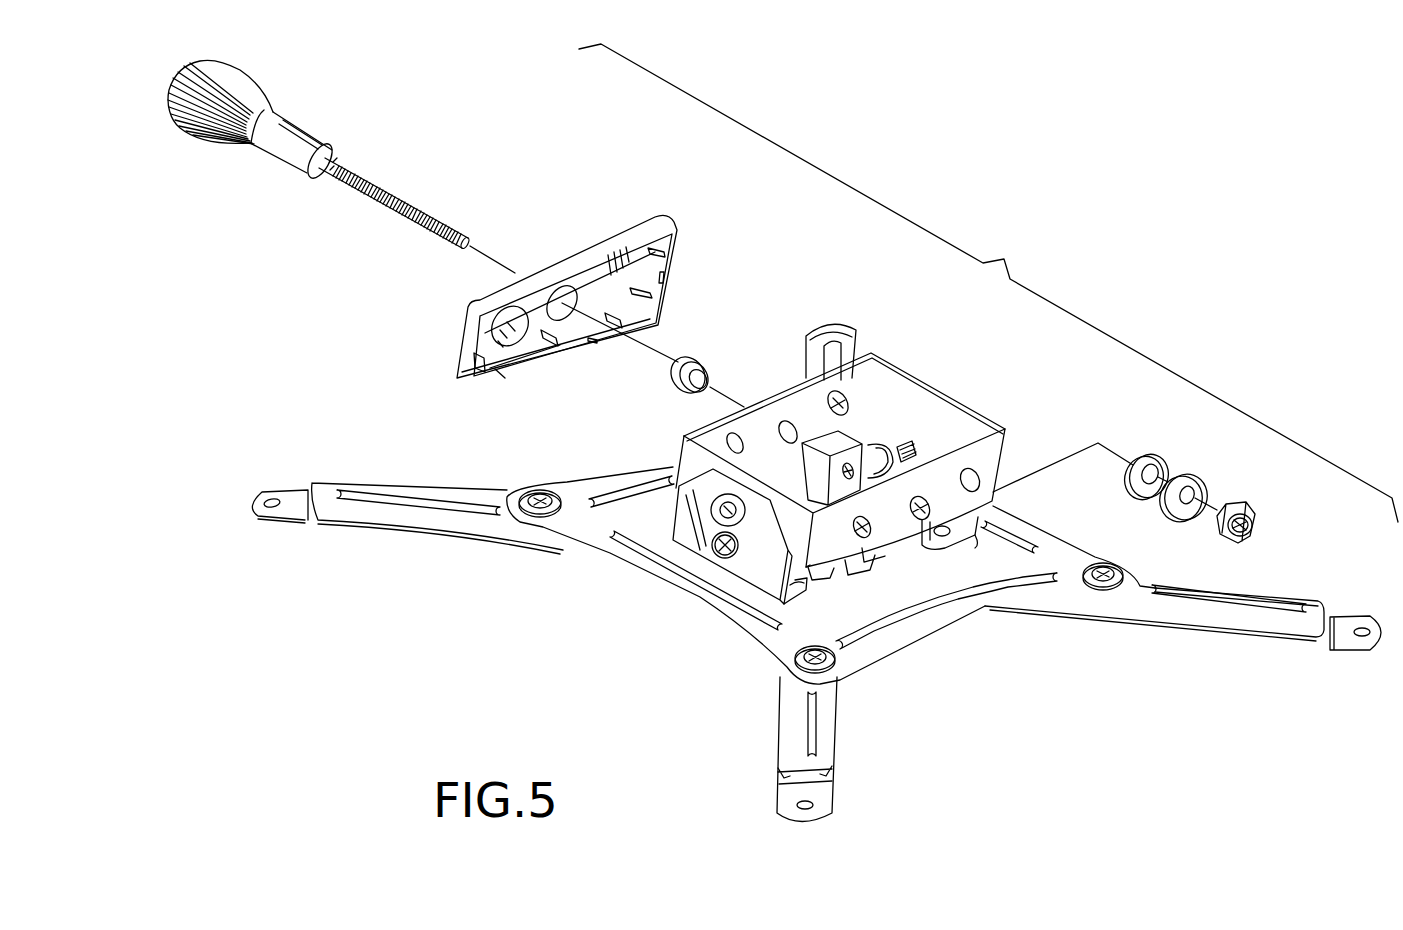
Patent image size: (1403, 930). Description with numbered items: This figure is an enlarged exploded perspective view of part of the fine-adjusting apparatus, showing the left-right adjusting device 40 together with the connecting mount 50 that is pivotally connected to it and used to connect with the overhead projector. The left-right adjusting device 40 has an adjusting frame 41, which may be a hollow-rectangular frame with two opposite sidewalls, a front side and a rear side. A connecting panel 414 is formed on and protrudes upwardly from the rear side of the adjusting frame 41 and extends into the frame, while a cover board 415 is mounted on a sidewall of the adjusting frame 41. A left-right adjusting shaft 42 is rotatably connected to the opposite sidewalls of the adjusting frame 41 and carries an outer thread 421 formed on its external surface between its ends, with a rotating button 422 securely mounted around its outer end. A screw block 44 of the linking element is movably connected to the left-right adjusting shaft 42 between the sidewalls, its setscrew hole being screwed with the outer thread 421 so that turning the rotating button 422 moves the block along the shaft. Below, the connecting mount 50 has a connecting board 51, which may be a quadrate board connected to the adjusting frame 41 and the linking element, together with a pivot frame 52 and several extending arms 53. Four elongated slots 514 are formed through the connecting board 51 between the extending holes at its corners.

The left-right adjusting device 40 is at (970, 366).
The adjusting frame 41 is at (878, 377).
The connecting panel 414 is at (897, 446).
The cover board 415 is at (642, 226).
The left-right adjusting shaft 42 is at (312, 192).
The outer thread 421 is at (397, 213).
The rotating button 422 is at (232, 137).
The screw block 44 is at (838, 437).
The connecting mount 50 is at (682, 632).
The connecting board 51 is at (920, 628).
The elongated slot 514 is at (947, 598).
The pivot frame 52 is at (774, 593).
The extending arm 53 is at (830, 747).